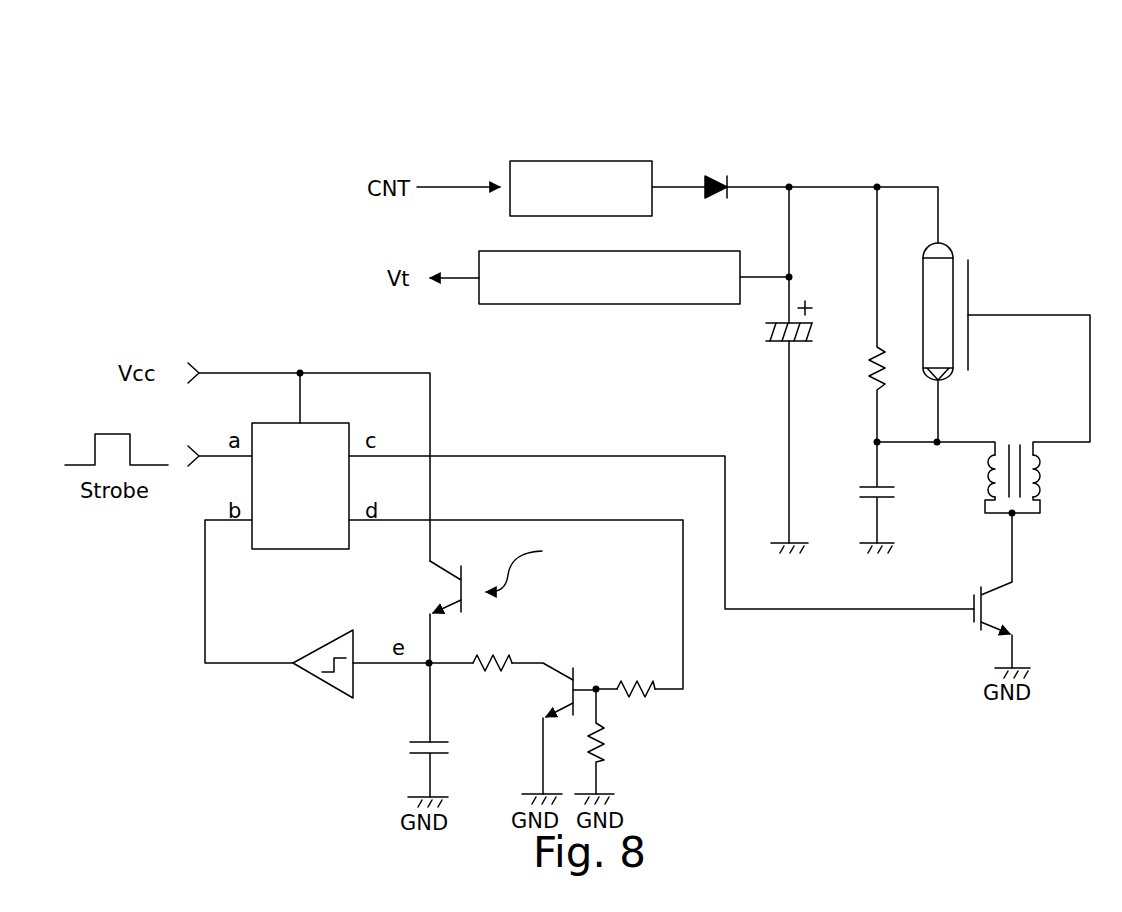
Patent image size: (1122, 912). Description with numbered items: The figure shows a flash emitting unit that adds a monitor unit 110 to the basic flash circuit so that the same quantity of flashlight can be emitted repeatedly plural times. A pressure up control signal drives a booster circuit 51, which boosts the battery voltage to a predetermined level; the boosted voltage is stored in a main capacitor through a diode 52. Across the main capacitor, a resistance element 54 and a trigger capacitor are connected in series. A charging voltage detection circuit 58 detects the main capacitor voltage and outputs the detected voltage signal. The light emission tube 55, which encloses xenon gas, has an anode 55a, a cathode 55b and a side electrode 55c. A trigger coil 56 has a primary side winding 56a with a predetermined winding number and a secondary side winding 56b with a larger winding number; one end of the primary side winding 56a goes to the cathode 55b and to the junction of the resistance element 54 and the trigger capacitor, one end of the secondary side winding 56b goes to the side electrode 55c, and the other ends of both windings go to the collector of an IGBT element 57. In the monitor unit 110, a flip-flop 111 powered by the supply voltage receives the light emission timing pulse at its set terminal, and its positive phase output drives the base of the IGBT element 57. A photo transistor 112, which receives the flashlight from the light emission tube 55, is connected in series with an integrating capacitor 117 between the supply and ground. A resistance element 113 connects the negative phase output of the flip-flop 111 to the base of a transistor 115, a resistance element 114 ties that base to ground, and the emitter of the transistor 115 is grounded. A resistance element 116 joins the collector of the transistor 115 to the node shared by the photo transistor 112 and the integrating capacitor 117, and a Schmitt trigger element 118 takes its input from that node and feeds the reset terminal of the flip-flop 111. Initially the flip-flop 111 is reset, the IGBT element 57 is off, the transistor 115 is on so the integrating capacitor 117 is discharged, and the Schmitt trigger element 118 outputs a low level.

The booster circuit 51 is at (580, 161).
The diode 52 is at (716, 176).
The resistance element 54 is at (868, 362).
The light emission tube 55 is at (998, 292).
The anode 55a is at (946, 248).
The cathode 55b is at (946, 378).
The side electrode 55c is at (968, 283).
The trigger coil 56 is at (1023, 446).
The primary side winding 56a is at (988, 472).
The secondary side winding 56b is at (1042, 480).
The IGBT element 57 is at (998, 605).
The charging voltage detection circuit 58 is at (580, 304).
The monitor unit 110 is at (261, 321).
The flip-flop 111 is at (268, 423).
The photo transistor 112 is at (445, 590).
The resistance element 113 is at (647, 682).
The resistance element 114 is at (601, 752).
The transistor 115 is at (556, 666).
The resistance element 116 is at (496, 680).
The integrating capacitor 117 is at (421, 740).
The Schmitt trigger element 118 is at (323, 645).